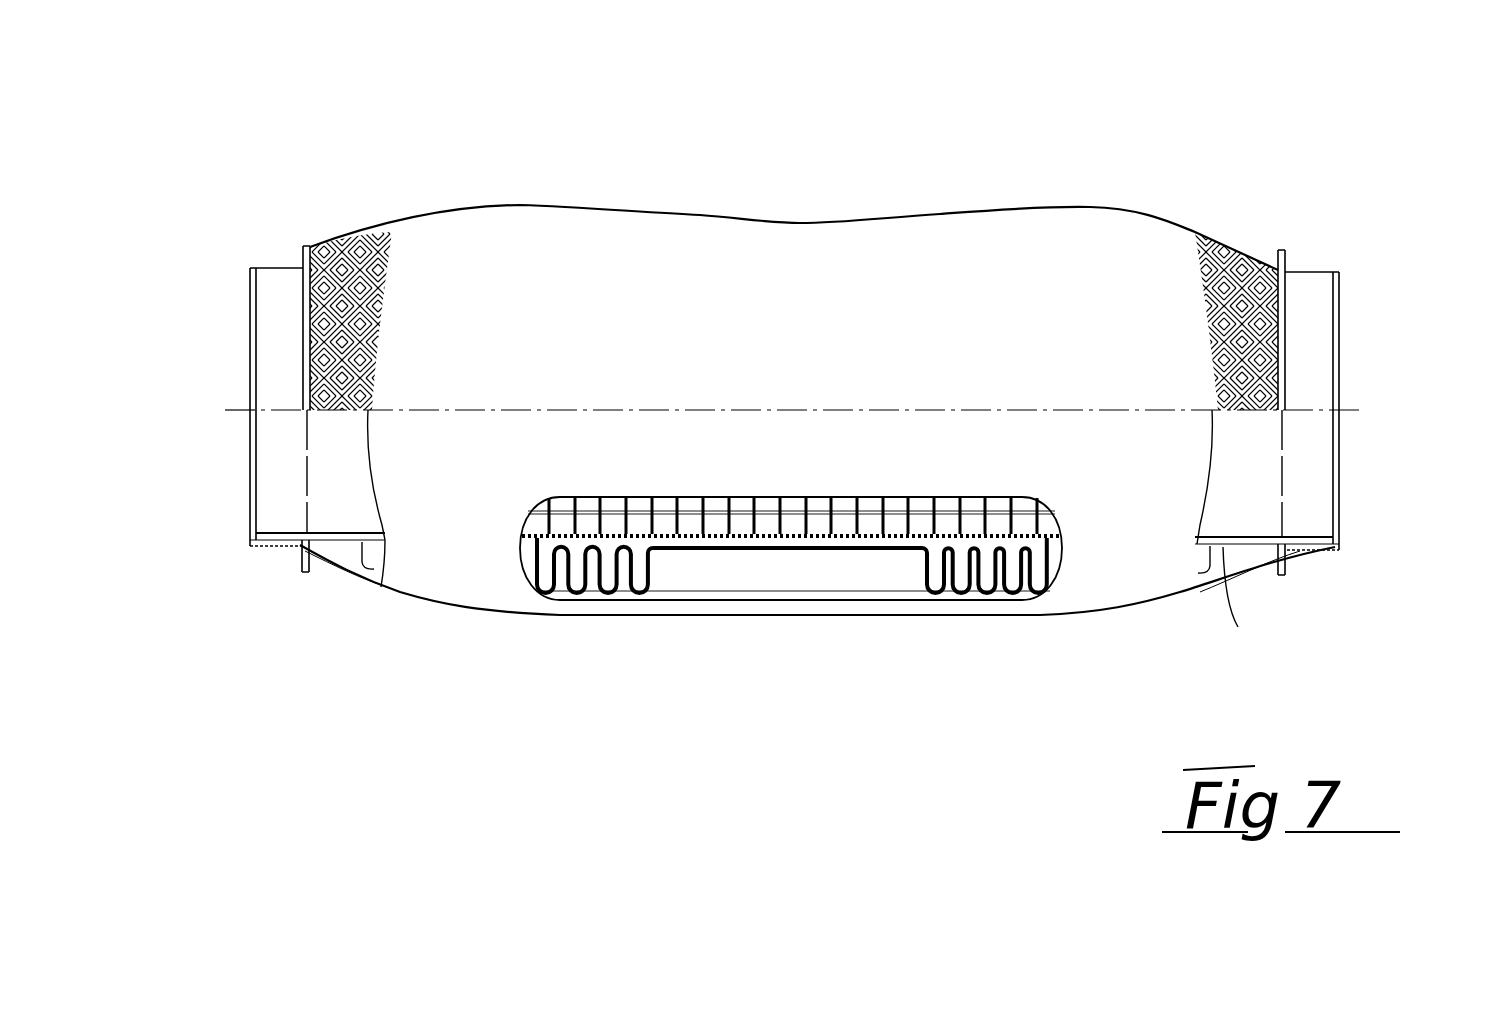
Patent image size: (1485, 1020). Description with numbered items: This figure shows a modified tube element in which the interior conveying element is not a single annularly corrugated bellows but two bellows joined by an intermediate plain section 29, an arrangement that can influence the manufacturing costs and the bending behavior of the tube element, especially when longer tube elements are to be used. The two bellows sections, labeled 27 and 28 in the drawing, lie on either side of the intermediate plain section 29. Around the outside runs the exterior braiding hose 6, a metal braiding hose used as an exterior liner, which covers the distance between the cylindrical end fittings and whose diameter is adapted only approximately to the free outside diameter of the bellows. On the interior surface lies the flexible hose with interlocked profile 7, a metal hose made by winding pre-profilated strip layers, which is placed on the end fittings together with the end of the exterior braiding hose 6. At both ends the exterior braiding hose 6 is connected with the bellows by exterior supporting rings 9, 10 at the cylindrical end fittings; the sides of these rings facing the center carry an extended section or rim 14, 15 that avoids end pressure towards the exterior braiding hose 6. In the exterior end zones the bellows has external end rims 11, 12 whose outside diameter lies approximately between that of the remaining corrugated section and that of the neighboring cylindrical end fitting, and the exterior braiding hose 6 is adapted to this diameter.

The exterior braiding hose 6 is at (847, 255).
The flexible hose with interlocked profile 7 is at (798, 627).
The exterior supporting ring 9 is at (280, 490).
The exterior supporting ring 10 is at (1305, 470).
The external end rim 11 is at (372, 560).
The external end rim 12 is at (1203, 563).
The rim 14 is at (305, 245).
The rim 15 is at (1282, 250).
The left convolution group of bellows 27 is at (592, 575).
The right convolution group of bellows 28 is at (975, 572).
The intermediate plain section 29 is at (795, 652).